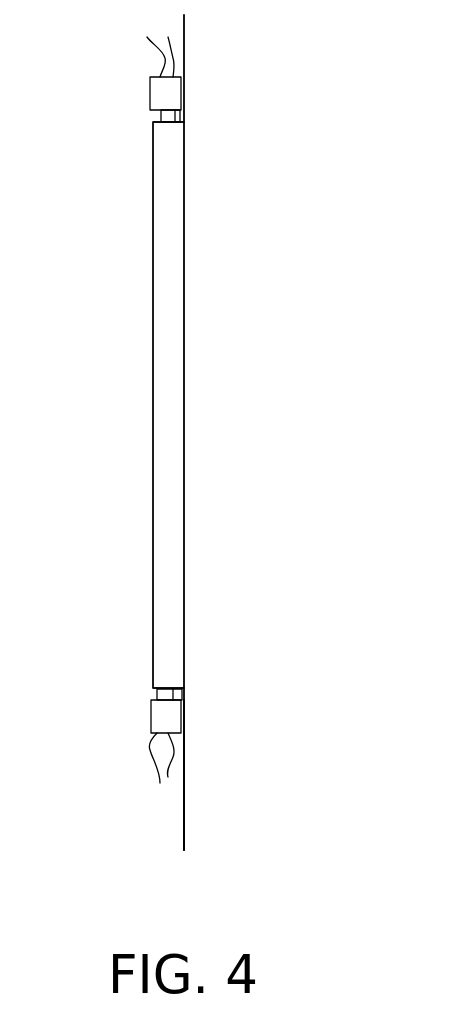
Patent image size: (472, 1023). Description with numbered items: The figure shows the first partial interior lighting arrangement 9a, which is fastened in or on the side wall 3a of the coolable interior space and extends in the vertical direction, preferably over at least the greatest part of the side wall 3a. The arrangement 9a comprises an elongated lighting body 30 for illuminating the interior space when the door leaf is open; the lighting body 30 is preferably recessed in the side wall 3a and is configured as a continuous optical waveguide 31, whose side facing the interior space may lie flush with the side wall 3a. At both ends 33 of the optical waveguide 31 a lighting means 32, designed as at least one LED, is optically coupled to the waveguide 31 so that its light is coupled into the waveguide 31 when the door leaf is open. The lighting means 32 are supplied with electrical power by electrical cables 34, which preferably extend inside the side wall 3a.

The first partial interior lighting arrangement 9a is at (212, 104).
The side wall 3a is at (185, 815).
The elongated lighting body 30 is at (119, 412).
The continuous optical waveguide 31 is at (163, 548).
The lighting means 32 is at (162, 112).
The ends of the optical waveguide 33 is at (170, 123).
The electrical cables 34 is at (165, 57).